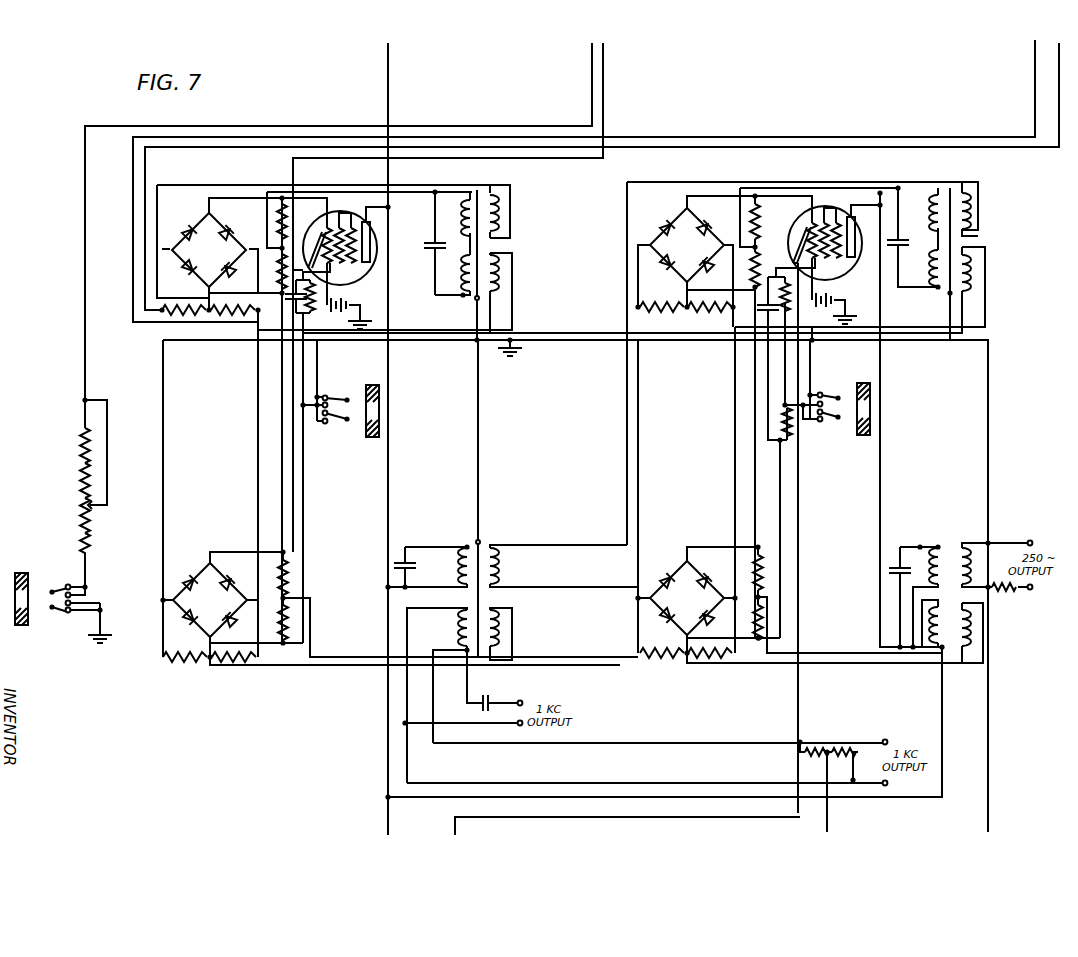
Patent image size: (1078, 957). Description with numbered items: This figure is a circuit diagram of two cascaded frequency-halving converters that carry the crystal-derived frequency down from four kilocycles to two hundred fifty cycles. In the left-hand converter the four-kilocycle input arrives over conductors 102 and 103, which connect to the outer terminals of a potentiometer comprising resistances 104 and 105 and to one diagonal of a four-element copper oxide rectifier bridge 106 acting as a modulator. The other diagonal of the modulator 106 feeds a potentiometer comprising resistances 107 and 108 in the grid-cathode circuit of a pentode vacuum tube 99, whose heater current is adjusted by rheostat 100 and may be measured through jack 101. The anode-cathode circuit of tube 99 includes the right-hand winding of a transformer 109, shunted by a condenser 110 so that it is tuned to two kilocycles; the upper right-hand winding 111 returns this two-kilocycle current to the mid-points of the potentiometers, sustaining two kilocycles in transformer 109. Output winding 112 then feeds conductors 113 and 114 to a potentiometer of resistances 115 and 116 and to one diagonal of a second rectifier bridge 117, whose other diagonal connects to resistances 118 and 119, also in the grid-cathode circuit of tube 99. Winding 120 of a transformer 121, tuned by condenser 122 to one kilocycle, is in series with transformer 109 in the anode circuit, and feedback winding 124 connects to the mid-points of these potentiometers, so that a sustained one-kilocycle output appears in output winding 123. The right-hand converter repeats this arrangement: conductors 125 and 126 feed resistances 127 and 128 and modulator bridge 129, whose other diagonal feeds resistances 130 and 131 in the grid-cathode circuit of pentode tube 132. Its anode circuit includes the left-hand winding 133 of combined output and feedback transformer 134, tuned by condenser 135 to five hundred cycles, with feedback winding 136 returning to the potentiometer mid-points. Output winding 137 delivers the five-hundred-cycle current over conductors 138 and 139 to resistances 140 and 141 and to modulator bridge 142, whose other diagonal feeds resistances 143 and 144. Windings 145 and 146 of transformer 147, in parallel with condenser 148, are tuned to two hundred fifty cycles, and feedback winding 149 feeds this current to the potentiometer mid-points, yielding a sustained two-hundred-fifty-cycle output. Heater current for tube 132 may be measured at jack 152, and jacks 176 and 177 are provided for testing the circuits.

The vacuum tube 99 is at (346, 279).
The rheostat 100 is at (80, 470).
The jack 101 is at (22, 573).
The conductor 102 is at (1035, 60).
The conductor 103 is at (1059, 83).
The resistance 104 is at (182, 318).
The resistance 105 is at (230, 318).
The rectifier bridge 106 is at (209, 250).
The resistance 107 is at (278, 230).
The resistance 108 is at (276, 278).
The transformer 109 is at (492, 176).
The condenser 110 is at (430, 250).
The upper right-hand winding 111 is at (499, 219).
The output winding 112 is at (499, 268).
The conductor 113 is at (164, 478).
The conductor 114 is at (258, 476).
The resistance 115 is at (188, 662).
The resistance 116 is at (242, 662).
The rectifier bridge 117 is at (210, 600).
The resistance 118 is at (289, 578).
The resistance 119 is at (289, 616).
The winding 120 is at (460, 549).
The transformer 121 is at (490, 546).
The condenser 122 is at (422, 547).
The output winding 123 is at (499, 561).
The feedback winding 124 is at (499, 630).
The conductor 125 is at (627, 408).
The conductor 126 is at (638, 410).
The resistance 127 is at (670, 314).
The resistance 128 is at (718, 314).
The rectifier bridge 129 is at (687, 245).
The resistance 130 is at (758, 222).
The resistance 131 is at (758, 258).
The vacuum tube 132 is at (837, 277).
The left-hand winding 133 is at (930, 225).
The combined output and feedback transformer 134 is at (962, 184).
The condenser 135 is at (904, 248).
The feedback winding 136 is at (973, 222).
The output winding 137 is at (973, 270).
The conductor 138 is at (638, 463).
The conductor 139 is at (735, 502).
The resistance 140 is at (660, 660).
The resistance 141 is at (708, 660).
The rectifier bridge 142 is at (687, 598).
The resistance 143 is at (764, 574).
The resistance 144 is at (764, 620).
The winding 145 is at (932, 546).
The winding 146 is at (930, 626).
The transformer 147 is at (955, 546).
The condenser 148 is at (898, 566).
The feedback winding 149 is at (972, 626).
The jack 152 is at (990, 752).
The jack 176 is at (379, 438).
The jack 177 is at (868, 437).